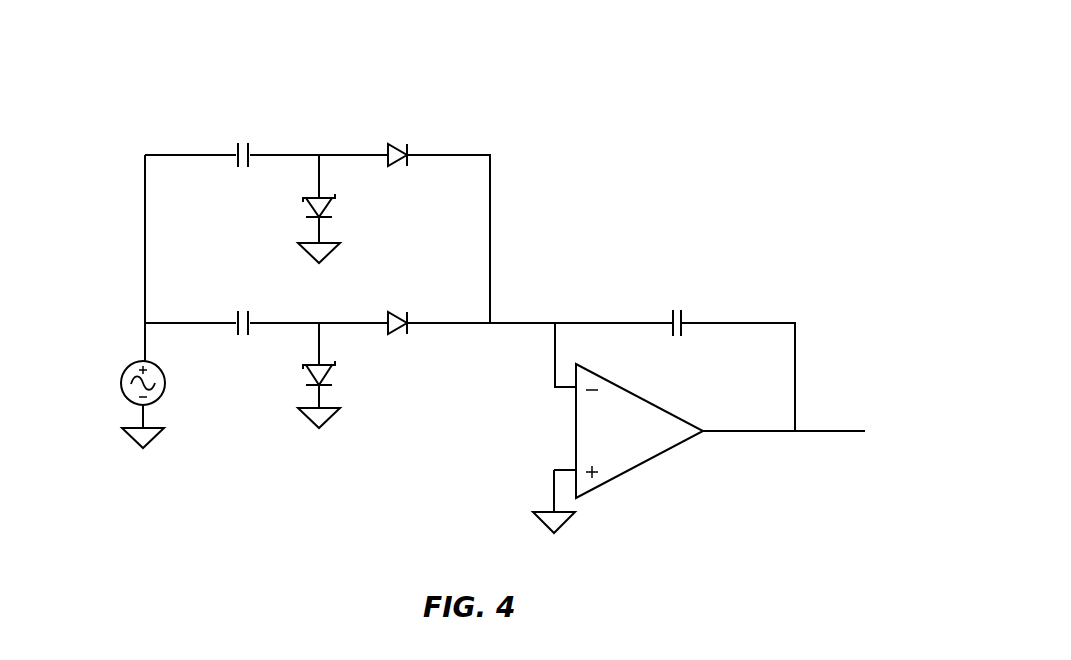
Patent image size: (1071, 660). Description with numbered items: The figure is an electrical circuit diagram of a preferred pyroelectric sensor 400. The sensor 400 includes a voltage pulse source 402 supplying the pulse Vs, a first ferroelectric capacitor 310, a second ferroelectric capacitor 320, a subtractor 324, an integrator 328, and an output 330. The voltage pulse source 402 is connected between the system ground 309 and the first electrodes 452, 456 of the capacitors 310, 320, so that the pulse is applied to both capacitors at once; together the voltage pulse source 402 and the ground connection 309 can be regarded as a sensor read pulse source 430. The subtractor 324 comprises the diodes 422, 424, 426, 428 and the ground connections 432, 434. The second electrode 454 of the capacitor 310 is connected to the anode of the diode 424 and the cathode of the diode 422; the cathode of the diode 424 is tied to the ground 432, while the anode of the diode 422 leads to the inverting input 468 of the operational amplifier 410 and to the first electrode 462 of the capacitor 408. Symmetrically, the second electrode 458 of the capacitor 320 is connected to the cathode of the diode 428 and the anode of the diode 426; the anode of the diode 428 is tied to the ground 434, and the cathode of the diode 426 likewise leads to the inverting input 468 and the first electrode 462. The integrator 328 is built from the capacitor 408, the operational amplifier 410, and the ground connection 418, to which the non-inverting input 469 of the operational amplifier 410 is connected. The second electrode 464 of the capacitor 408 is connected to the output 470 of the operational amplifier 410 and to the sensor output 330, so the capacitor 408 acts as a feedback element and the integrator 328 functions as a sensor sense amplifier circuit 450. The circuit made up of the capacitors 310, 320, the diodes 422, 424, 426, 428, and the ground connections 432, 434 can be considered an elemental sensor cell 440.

The pyroelectric sensor 400 is at (626, 97).
The elemental sensor cell 440 is at (350, 83).
The subtractor 324 is at (413, 83).
The integrator 328 is at (752, 231).
The sensor sense amplifier circuit 450 is at (848, 309).
The sensor read pulse source 430 is at (89, 454).
The first ferroelectric capacitor 310 is at (242, 138).
The first electrode of capacitor 310 452 is at (236, 164).
The second electrode of capacitor 310 454 is at (251, 151).
The second ferroelectric capacitor 320 is at (248, 330).
The first electrode of capacitor 320 456 is at (237, 311).
The second electrode of capacitor 320 458 is at (251, 318).
The diode 422 is at (400, 144).
The diode 426 is at (390, 310).
The diode 424 is at (306, 206).
The diode 428 is at (333, 373).
The ground connection 432 is at (336, 256).
The ground connection 434 is at (327, 420).
The voltage pulse source 402 is at (122, 384).
The system ground 309 is at (152, 438).
The capacitor 408 is at (678, 320).
The first electrode of capacitor 408 462 is at (671, 318).
The second electrode of capacitor 408 464 is at (688, 333).
The operational amplifier 410 is at (645, 467).
The inverting input 468 is at (554, 392).
The non-inverting input 469 is at (554, 469).
The output of operational amplifier 470 is at (712, 434).
The ground connection 418 is at (566, 528).
The output 330 is at (845, 433).